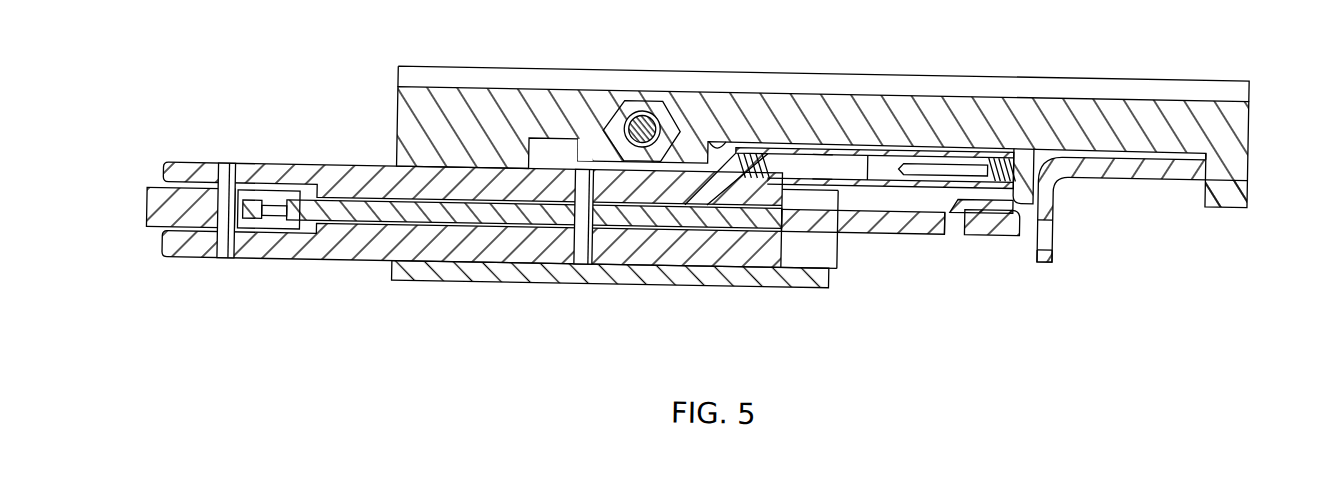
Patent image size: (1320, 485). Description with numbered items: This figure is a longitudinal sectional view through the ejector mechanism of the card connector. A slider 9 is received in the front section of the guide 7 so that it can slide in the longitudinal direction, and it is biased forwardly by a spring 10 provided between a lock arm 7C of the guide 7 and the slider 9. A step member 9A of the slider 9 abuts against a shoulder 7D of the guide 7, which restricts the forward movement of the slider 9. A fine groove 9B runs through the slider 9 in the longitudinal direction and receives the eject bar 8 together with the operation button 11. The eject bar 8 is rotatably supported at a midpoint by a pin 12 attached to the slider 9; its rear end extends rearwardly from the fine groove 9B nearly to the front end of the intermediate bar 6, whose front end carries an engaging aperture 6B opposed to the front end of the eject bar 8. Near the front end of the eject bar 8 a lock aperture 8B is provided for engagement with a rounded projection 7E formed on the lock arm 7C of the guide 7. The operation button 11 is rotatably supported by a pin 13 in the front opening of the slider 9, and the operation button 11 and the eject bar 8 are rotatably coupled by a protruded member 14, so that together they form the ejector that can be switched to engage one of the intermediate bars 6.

The intermediate bar 6 is at (1130, 165).
The engaging aperture 6B is at (1052, 232).
The guide 7 is at (743, 274).
The lock arm 7C is at (1025, 162).
The shoulder 7D is at (715, 139).
The rounded projection 7E is at (980, 218).
The eject bar 8 is at (868, 217).
The lock aperture 8B is at (957, 215).
The slider 9 is at (340, 254).
The step member 9A is at (712, 160).
The fine groove 9B is at (483, 226).
The spring 10 is at (980, 166).
The operation button 11 is at (162, 216).
The pin 12 is at (584, 170).
The pin 13 is at (226, 170).
The protruded member 14 is at (275, 204).